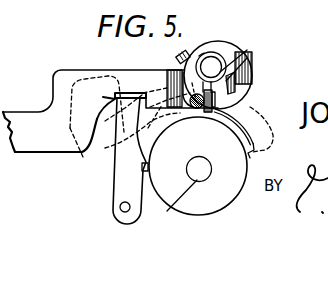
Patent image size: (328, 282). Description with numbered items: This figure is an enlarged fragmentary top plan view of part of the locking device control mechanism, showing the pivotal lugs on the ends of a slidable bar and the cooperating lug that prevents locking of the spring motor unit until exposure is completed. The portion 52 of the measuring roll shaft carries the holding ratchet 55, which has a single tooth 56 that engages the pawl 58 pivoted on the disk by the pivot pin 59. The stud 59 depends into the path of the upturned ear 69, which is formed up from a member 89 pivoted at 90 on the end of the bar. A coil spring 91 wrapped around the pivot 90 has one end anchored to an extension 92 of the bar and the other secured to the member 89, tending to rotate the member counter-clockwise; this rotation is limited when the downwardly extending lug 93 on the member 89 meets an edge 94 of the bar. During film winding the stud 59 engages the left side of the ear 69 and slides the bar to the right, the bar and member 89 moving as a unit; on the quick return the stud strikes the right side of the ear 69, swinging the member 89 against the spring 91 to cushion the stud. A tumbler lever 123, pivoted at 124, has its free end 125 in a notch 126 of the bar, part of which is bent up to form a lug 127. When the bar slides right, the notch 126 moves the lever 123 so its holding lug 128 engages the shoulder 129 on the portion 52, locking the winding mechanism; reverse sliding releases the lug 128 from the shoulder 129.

The portion of the shaft 52 is at (143, 199).
The holding ratchet 55 is at (226, 205).
The tooth 56 is at (248, 107).
The pawl 58 is at (252, 95).
The pivot pin 59 is at (193, 113).
The upturned ear 69 is at (218, 113).
The member 89 is at (221, 51).
The pivot 90 is at (221, 66).
The coil spring 91 is at (199, 52).
The extension 92 is at (252, 55).
The downwardly extending lug 93 is at (176, 58).
The edge 94 is at (139, 70).
The tumbler lever 123 is at (117, 183).
The pivot 124 is at (120, 208).
The free end 125 is at (107, 98).
The notch 126 is at (114, 95).
The lug 127 is at (121, 92).
The holding lug 128 is at (142, 165).
The shoulder 129 is at (196, 177).